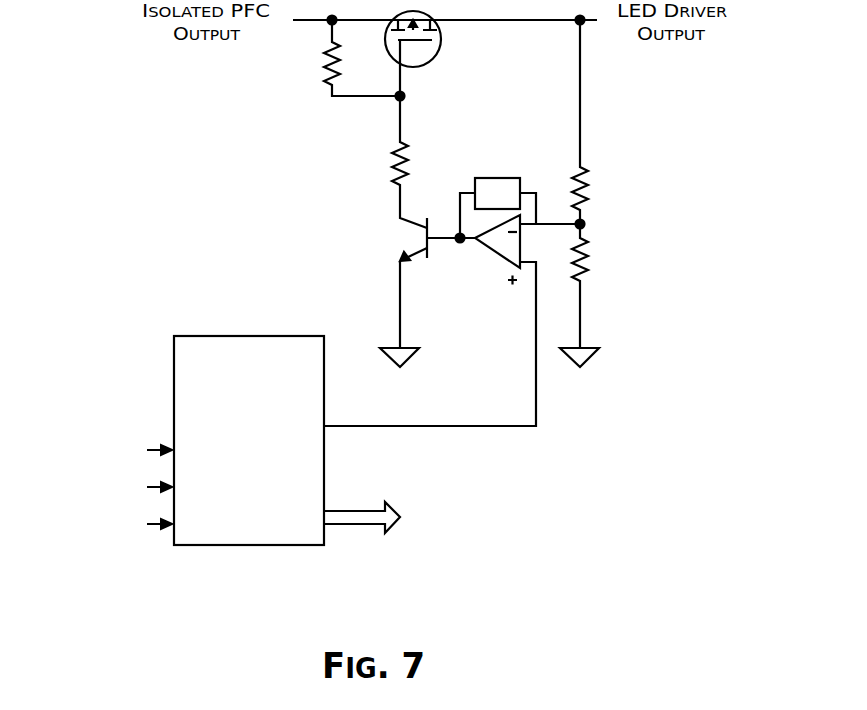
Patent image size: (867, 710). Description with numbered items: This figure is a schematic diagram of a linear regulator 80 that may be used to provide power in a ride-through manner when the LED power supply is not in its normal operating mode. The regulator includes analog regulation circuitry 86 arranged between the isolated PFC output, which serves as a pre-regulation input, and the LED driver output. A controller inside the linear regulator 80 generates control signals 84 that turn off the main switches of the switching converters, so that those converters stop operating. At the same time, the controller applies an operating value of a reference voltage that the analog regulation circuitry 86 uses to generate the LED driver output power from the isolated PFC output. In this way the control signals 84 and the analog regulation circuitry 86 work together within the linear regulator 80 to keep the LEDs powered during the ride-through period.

The linear regulator 80 is at (218, 595).
The control signals 84 is at (362, 527).
The analog regulation circuitry 86 is at (281, 183).